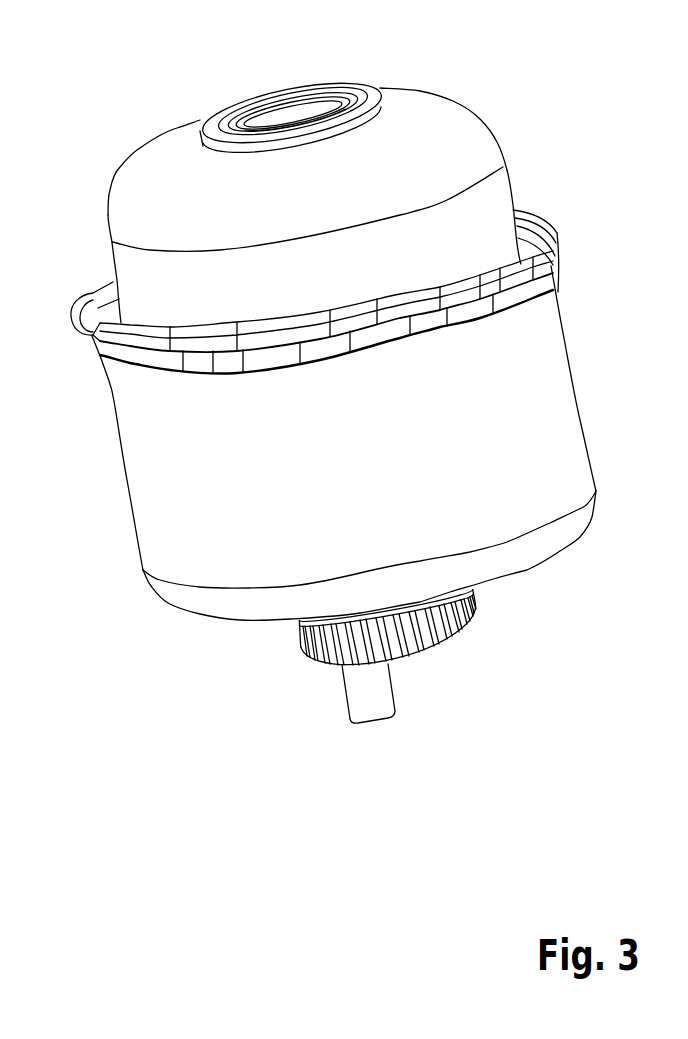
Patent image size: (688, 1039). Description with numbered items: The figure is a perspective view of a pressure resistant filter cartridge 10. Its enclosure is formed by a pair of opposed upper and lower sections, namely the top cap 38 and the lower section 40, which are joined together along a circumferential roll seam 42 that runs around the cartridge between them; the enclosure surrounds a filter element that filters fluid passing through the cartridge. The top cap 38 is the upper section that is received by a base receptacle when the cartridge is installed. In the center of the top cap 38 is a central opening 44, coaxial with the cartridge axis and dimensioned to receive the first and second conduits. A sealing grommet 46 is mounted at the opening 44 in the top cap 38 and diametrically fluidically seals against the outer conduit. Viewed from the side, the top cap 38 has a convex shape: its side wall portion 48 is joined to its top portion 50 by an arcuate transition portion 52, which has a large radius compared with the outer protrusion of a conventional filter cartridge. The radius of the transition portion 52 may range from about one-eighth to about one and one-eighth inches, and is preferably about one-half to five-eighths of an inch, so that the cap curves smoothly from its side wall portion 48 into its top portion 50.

The pressure resistant filter cartridge 10 is at (115, 78).
The top cap 38 is at (513, 181).
The lower section 40 is at (577, 376).
The circumferential roll seam 42 is at (553, 235).
The central opening 44 is at (306, 79).
The sealing grommet 46 is at (362, 92).
The side wall portion 48 is at (127, 263).
The top portion 50 is at (197, 122).
The arcuate transition portion 52 is at (478, 112).